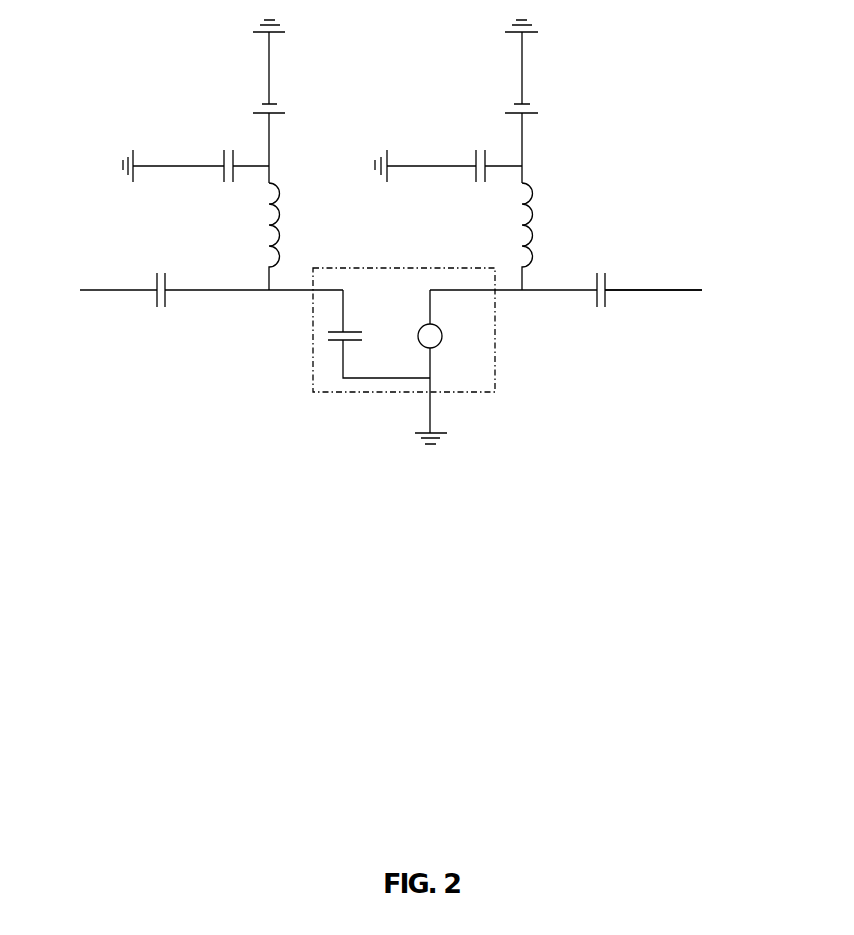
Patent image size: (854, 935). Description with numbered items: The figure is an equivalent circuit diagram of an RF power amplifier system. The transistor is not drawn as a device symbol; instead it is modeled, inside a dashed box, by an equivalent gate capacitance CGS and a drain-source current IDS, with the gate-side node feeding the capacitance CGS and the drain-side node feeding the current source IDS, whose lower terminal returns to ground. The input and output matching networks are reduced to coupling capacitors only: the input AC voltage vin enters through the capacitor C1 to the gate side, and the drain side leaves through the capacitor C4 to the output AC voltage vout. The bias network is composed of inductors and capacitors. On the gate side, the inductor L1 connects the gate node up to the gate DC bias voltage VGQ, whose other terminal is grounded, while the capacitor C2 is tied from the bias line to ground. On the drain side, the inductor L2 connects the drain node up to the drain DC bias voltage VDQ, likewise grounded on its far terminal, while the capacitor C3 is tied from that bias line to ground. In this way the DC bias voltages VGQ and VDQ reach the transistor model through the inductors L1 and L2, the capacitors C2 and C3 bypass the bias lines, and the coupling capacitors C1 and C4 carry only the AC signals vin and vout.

The capacitor C1 is at (246, 311).
The capacitor C2 is at (196, 153).
The capacitor C3 is at (448, 153).
The capacitor C4 is at (566, 311).
The inductor L1 is at (288, 236).
The inductor L2 is at (539, 236).
The gate DC bias voltage VGQ is at (298, 137).
The drain DC bias voltage VDQ is at (550, 137).
The equivalent gate capacitance CGS is at (379, 334).
The drain-source current IDS is at (443, 367).
The input AC voltage vin is at (102, 292).
The output AC voltage vout is at (676, 292).